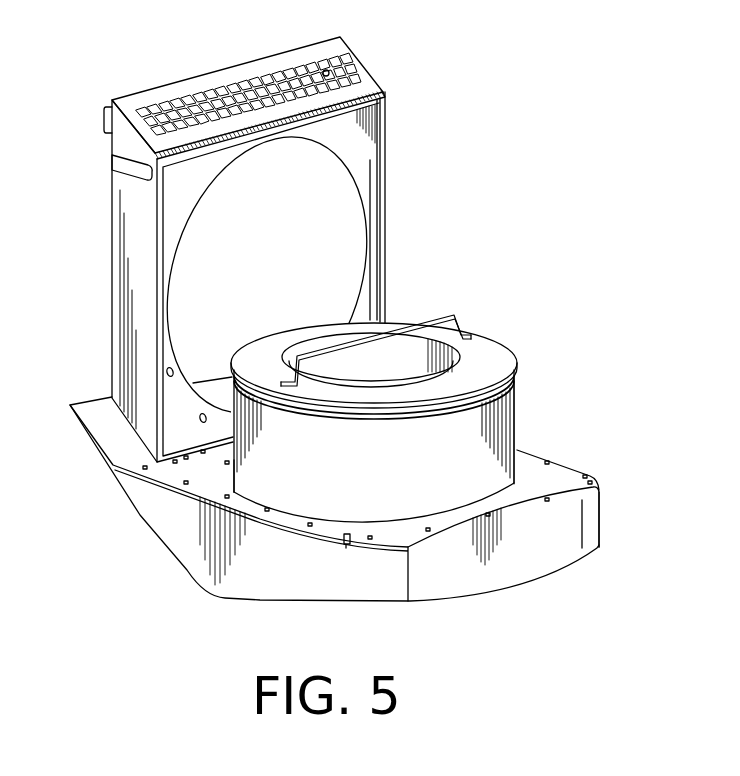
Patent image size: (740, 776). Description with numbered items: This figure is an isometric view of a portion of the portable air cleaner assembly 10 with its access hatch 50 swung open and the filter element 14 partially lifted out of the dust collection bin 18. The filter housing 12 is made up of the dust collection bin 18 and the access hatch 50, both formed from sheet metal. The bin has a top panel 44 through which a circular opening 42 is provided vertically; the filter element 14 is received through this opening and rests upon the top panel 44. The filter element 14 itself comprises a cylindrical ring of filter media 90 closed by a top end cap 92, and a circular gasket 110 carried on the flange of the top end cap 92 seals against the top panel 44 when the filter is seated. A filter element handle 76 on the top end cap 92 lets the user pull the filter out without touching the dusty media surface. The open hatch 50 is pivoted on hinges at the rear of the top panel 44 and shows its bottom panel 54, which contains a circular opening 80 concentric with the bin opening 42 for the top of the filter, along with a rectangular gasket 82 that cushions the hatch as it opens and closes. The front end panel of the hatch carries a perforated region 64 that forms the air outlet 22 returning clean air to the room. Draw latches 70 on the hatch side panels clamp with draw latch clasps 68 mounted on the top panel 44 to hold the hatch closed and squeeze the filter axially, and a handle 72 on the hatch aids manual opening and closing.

The air cleaner assembly 10 is at (508, 232).
The filter housing 12 is at (592, 548).
The filter element 14 is at (487, 341).
The dust collection bin 18 is at (600, 518).
The air outlet 22 is at (188, 98).
The circular opening 42 is at (497, 503).
The top panel 44 is at (567, 472).
The access hatch 50 is at (112, 284).
The bottom panel 54 is at (370, 165).
The perforated region 64 is at (230, 88).
The draw latch clasps 68 is at (587, 477).
The draw latches 70 is at (111, 163).
The handle 72 is at (105, 122).
The filter element handle 76 is at (420, 327).
The circular opening 80 is at (367, 230).
The rectangular gasket 82 is at (386, 127).
The filter media 90 is at (243, 467).
The top end cap 92 is at (500, 356).
The circular gasket 110 is at (515, 366).